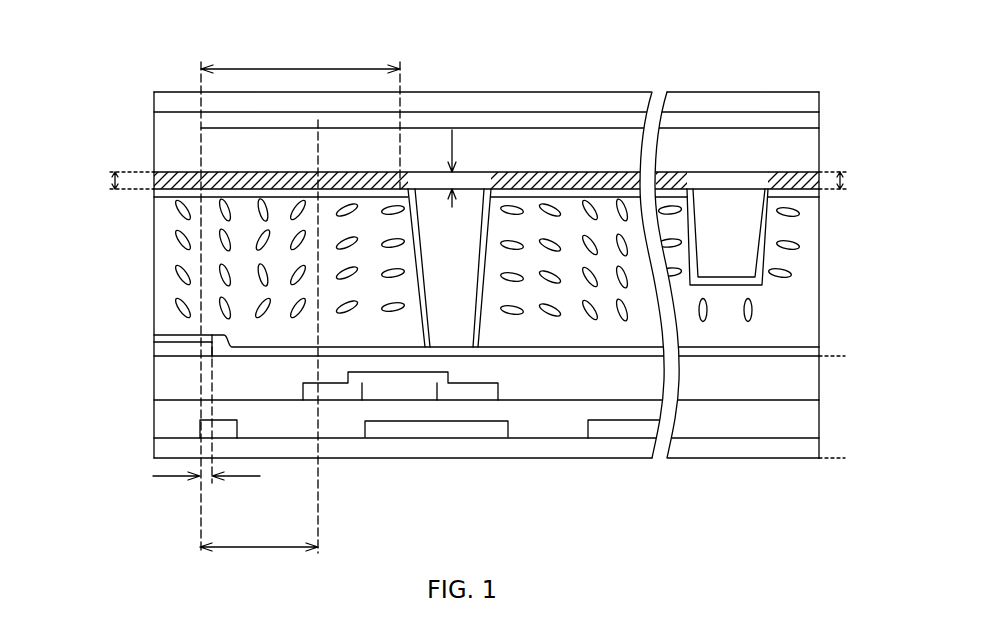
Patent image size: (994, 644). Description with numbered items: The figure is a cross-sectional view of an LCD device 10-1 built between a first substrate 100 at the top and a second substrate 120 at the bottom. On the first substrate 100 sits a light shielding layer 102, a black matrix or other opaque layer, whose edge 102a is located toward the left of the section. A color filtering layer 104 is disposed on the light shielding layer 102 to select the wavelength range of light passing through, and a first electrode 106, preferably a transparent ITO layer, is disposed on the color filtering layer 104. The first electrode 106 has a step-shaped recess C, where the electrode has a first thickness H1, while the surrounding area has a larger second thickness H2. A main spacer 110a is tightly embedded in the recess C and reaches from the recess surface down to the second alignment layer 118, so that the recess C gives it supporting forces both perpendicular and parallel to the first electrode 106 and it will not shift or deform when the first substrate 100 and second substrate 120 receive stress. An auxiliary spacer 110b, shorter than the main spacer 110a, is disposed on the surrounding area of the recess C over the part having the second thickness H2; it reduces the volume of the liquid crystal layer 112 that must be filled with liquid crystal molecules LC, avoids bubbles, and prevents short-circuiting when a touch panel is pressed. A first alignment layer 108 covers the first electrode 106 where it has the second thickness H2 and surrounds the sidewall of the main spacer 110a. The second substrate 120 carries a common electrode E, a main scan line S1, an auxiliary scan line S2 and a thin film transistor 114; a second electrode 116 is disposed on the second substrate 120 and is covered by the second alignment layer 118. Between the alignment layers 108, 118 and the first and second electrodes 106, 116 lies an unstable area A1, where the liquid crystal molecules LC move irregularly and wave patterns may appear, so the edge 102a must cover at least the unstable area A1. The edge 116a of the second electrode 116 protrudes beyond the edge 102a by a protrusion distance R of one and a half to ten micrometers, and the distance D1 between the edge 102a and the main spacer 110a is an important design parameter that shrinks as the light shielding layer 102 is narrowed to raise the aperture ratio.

The LCD device 10-1 is at (103, 46).
The first substrate 100 is at (802, 100).
The light shielding layer 102 is at (808, 122).
The edge of light shielding layer 102a is at (201, 128).
The color filtering layer 104 is at (812, 138).
The first electrode 106 is at (808, 178).
The first alignment layer 108 is at (812, 198).
The main spacer 110a is at (477, 203).
The auxiliary spacer 110b is at (727, 220).
The liquid crystal layer 112 is at (807, 268).
The transistor 114 is at (475, 377).
The second electrode 116 is at (160, 350).
The edge of second electrode 116a is at (213, 348).
The second alignment layer 118 is at (810, 352).
The second substrate 120 is at (825, 356).
The liquid crystal molecules LC is at (178, 235).
The common electrode E is at (200, 431).
The main scan line S1 is at (440, 428).
The auxiliary scan line S2 is at (623, 430).
The recess C is at (472, 176).
The first thickness H1 is at (440, 177).
The second thickness H2 is at (478, 182).
The distance between edge of light shielding layer and main spacer D1 is at (300, 294).
The protrusion distance R is at (206, 496).
The unstable area A1 is at (259, 563).